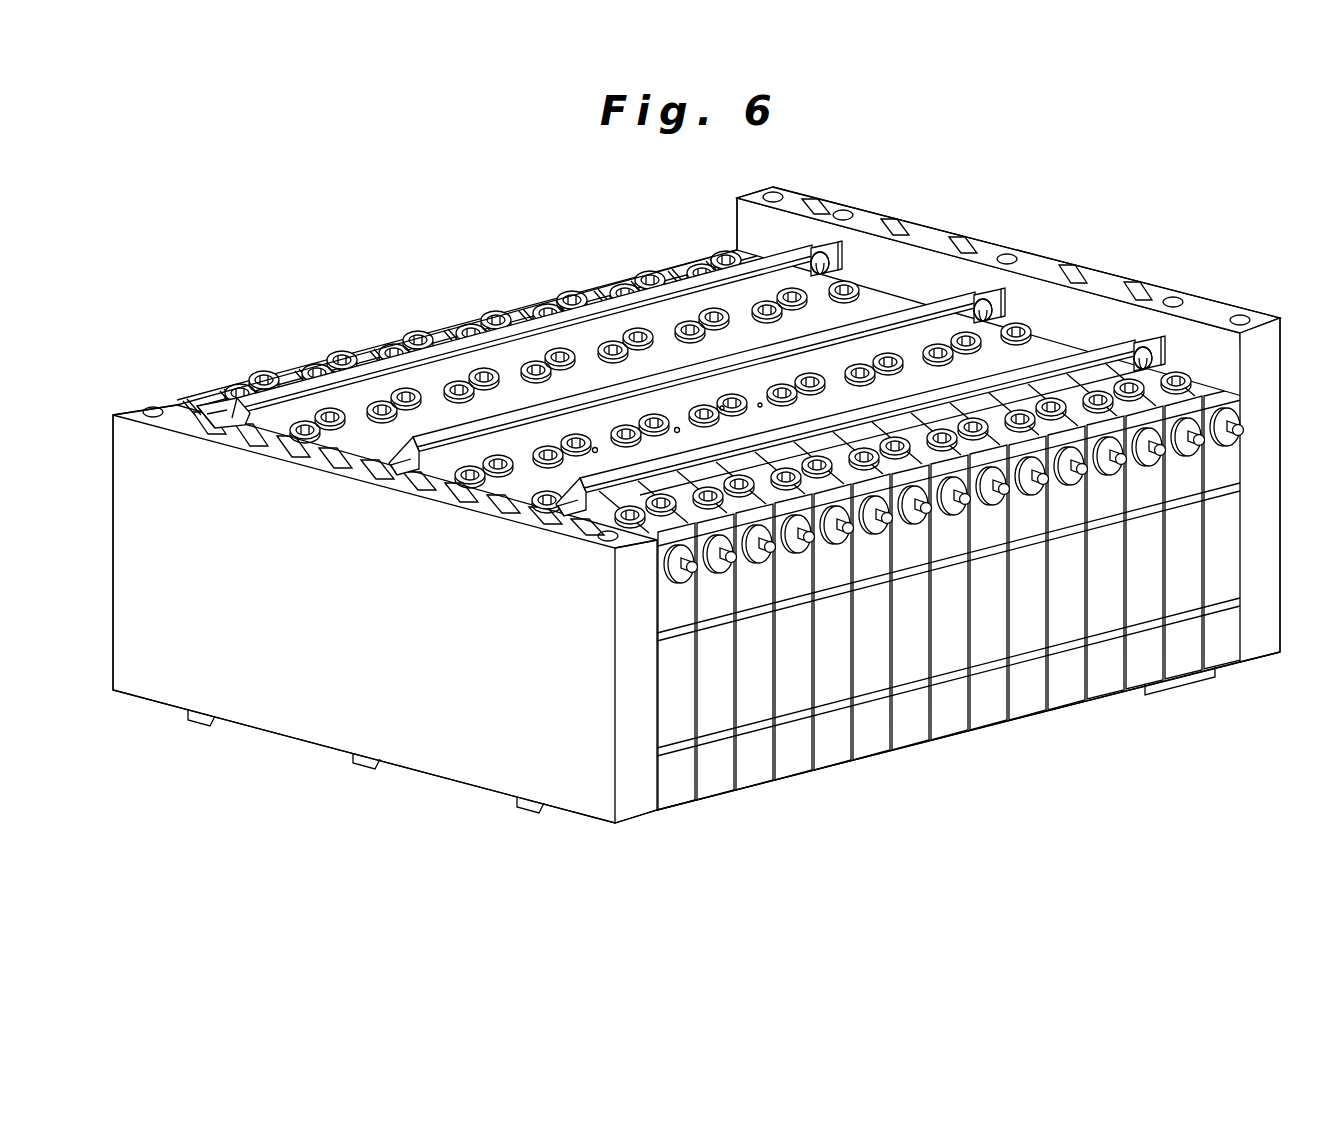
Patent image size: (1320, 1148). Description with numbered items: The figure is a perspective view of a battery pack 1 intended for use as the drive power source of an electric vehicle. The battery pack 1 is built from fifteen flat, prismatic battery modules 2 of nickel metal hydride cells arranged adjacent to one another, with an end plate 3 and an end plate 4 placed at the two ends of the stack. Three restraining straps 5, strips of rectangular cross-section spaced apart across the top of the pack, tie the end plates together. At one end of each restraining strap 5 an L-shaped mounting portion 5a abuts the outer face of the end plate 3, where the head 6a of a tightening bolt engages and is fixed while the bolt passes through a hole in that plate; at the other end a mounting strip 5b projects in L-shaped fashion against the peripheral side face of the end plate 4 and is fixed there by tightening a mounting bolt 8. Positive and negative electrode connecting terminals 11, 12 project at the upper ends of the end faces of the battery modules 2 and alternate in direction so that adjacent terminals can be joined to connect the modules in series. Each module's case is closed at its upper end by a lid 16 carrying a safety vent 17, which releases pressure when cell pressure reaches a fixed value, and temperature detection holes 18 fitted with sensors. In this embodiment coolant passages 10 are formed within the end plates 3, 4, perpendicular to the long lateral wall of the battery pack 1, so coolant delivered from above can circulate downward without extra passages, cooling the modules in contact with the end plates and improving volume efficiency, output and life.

The battery pack 1 is at (900, 195).
The battery module 2 is at (727, 257).
The end plate 3 is at (910, 270).
The end plate 4 is at (310, 705).
The restraining strap 5 is at (503, 343).
The L-shaped mounting portion 5a is at (833, 252).
The mounting strip 5b is at (205, 430).
The head of tightening bolt 6a is at (815, 250).
The mounting bolt 8 is at (217, 430).
The coolant passage 10 is at (303, 453).
The positive electrode connecting terminal 11 is at (683, 582).
The negative electrode connecting terminal 12 is at (722, 570).
The lid 16 is at (1210, 383).
The safety vent 17 is at (487, 373).
The temperature detection hole 18 is at (677, 430).